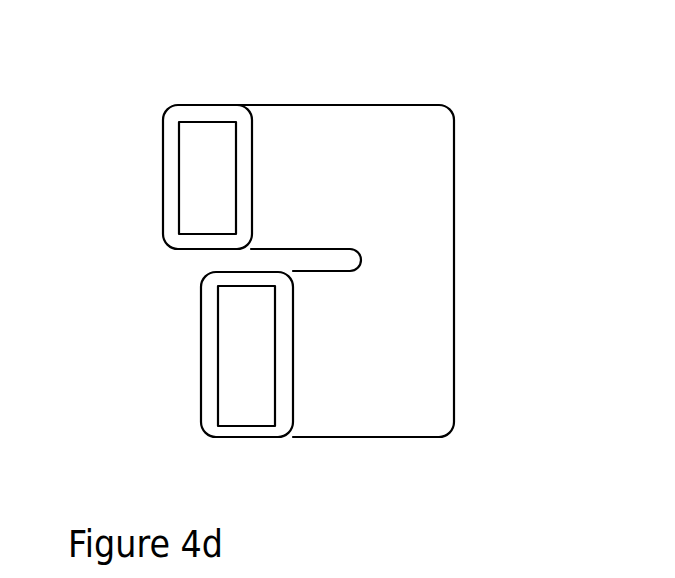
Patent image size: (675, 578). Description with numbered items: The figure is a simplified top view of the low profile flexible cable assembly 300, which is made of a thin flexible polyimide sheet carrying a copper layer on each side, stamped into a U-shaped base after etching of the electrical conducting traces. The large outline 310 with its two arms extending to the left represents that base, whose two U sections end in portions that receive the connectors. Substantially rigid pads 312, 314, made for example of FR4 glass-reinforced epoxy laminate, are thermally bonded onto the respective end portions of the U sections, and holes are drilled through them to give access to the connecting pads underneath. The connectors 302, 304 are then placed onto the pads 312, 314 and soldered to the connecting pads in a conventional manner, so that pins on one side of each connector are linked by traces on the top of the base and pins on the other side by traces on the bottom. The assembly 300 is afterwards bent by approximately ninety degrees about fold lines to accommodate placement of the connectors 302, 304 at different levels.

The low profile flexible cable assembly 300 is at (512, 87).
The connector 302 is at (199, 158).
The connector 304 is at (248, 367).
The body 310 is at (432, 322).
The substantially rigid pad 312 is at (253, 152).
The substantially rigid pad 314 is at (293, 367).